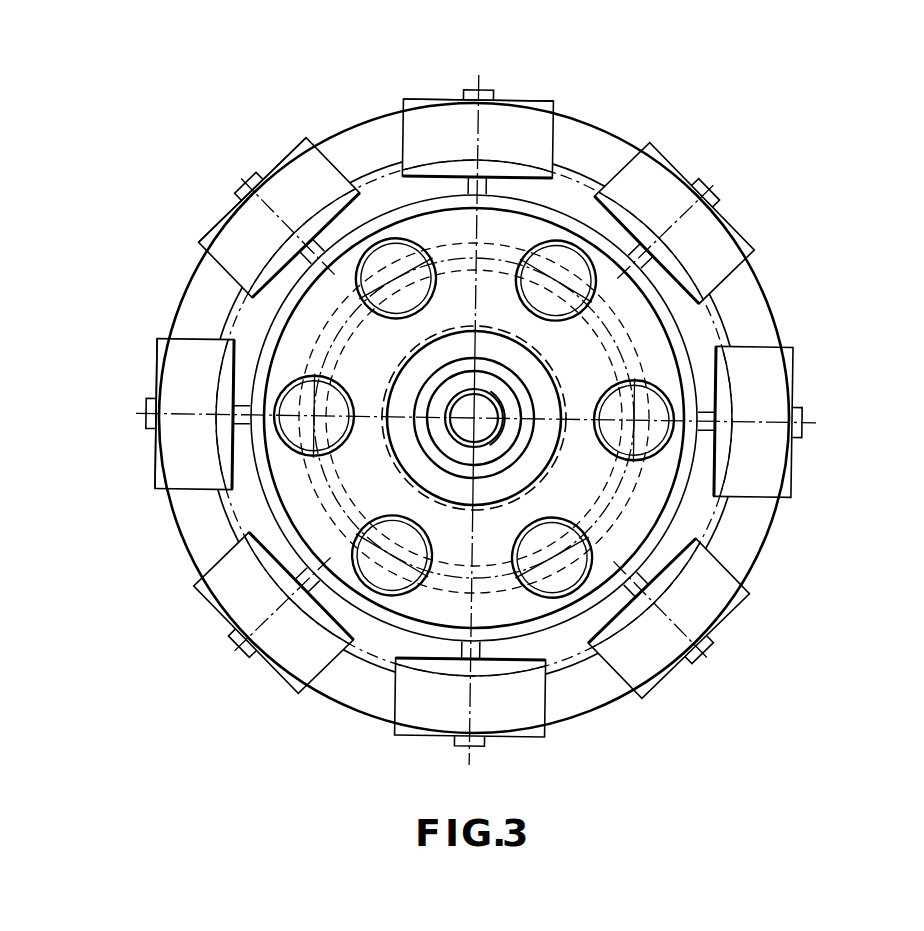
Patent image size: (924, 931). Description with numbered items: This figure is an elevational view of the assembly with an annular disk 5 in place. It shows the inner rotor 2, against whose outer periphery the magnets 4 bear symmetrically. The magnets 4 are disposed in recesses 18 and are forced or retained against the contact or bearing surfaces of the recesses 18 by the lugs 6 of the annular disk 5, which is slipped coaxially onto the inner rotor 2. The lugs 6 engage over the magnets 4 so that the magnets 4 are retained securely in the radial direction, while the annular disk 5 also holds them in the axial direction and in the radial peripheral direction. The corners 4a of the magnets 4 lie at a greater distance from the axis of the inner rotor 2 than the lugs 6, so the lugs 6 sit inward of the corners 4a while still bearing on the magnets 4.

The inner rotor 2 is at (643, 343).
The magnet 4 is at (527, 135).
The corner of the magnet 4a is at (200, 257).
The annular disk 5 is at (368, 148).
The lug 6 is at (497, 99).
The recess 18 is at (618, 280).